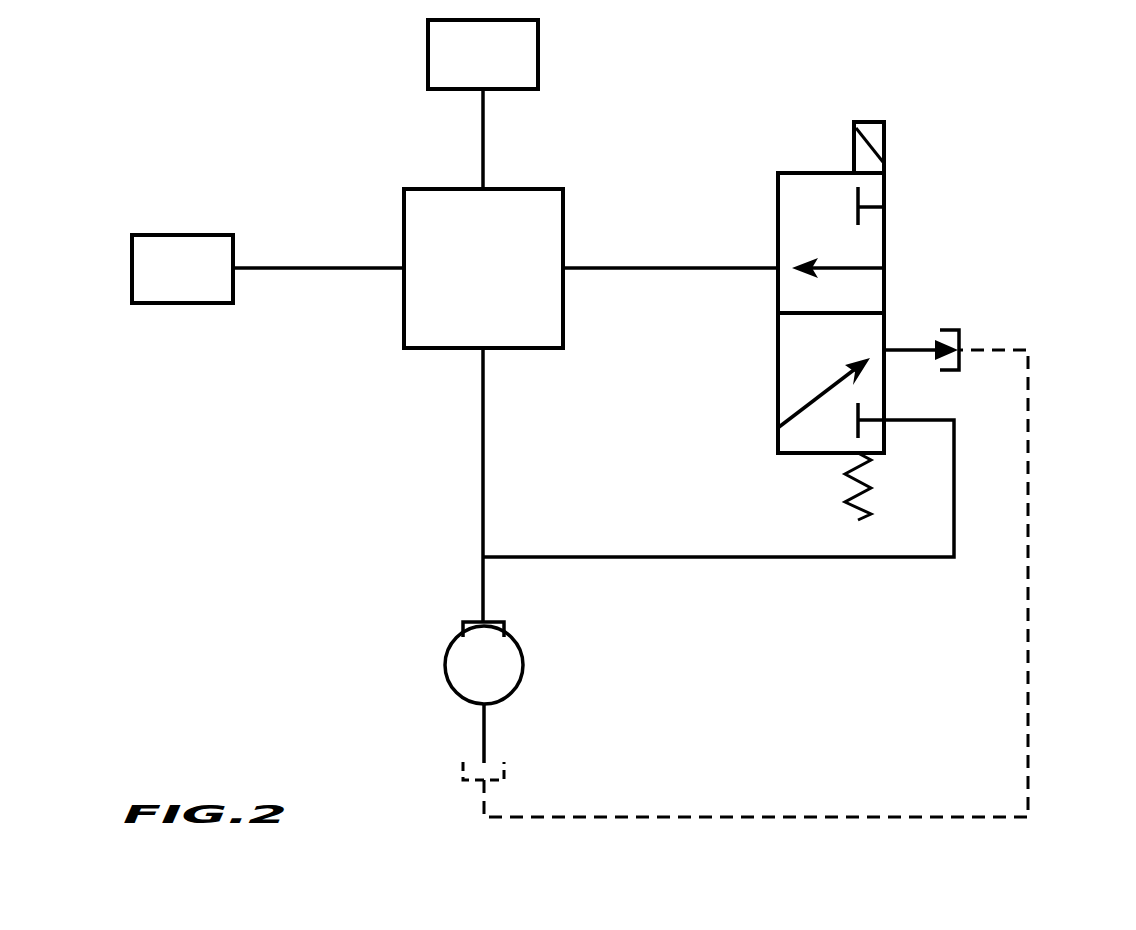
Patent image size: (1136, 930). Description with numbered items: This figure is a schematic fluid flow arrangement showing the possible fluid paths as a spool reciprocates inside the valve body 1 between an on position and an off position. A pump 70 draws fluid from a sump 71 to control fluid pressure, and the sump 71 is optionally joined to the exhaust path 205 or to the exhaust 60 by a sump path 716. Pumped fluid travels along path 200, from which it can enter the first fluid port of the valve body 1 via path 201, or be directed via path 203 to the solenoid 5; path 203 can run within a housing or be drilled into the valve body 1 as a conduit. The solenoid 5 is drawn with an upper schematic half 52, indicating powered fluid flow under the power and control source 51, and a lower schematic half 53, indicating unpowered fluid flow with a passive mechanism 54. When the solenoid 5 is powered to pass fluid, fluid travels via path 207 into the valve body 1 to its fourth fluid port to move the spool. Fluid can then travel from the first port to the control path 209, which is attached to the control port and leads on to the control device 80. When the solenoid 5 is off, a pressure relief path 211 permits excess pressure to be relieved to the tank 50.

The valve body 1 is at (495, 284).
The solenoid 5 is at (777, 182).
The tank 50 is at (199, 284).
The power and control source 51 is at (872, 122).
The upper schematic half 52 is at (885, 242).
The lower schematic half 53 is at (777, 385).
The passive mechanism 54 is at (845, 498).
The exhaust 60 is at (960, 333).
The pump 70 is at (501, 681).
The sump 71 is at (505, 768).
The control device 80 is at (500, 71).
The path 200 is at (483, 582).
The path 201 is at (483, 440).
The path 203 is at (720, 558).
The exhaust path 205 is at (910, 349).
The path 207 is at (693, 267).
The control path 209 is at (483, 138).
The pressure relief path 211 is at (340, 267).
The sump path 716 is at (1028, 583).